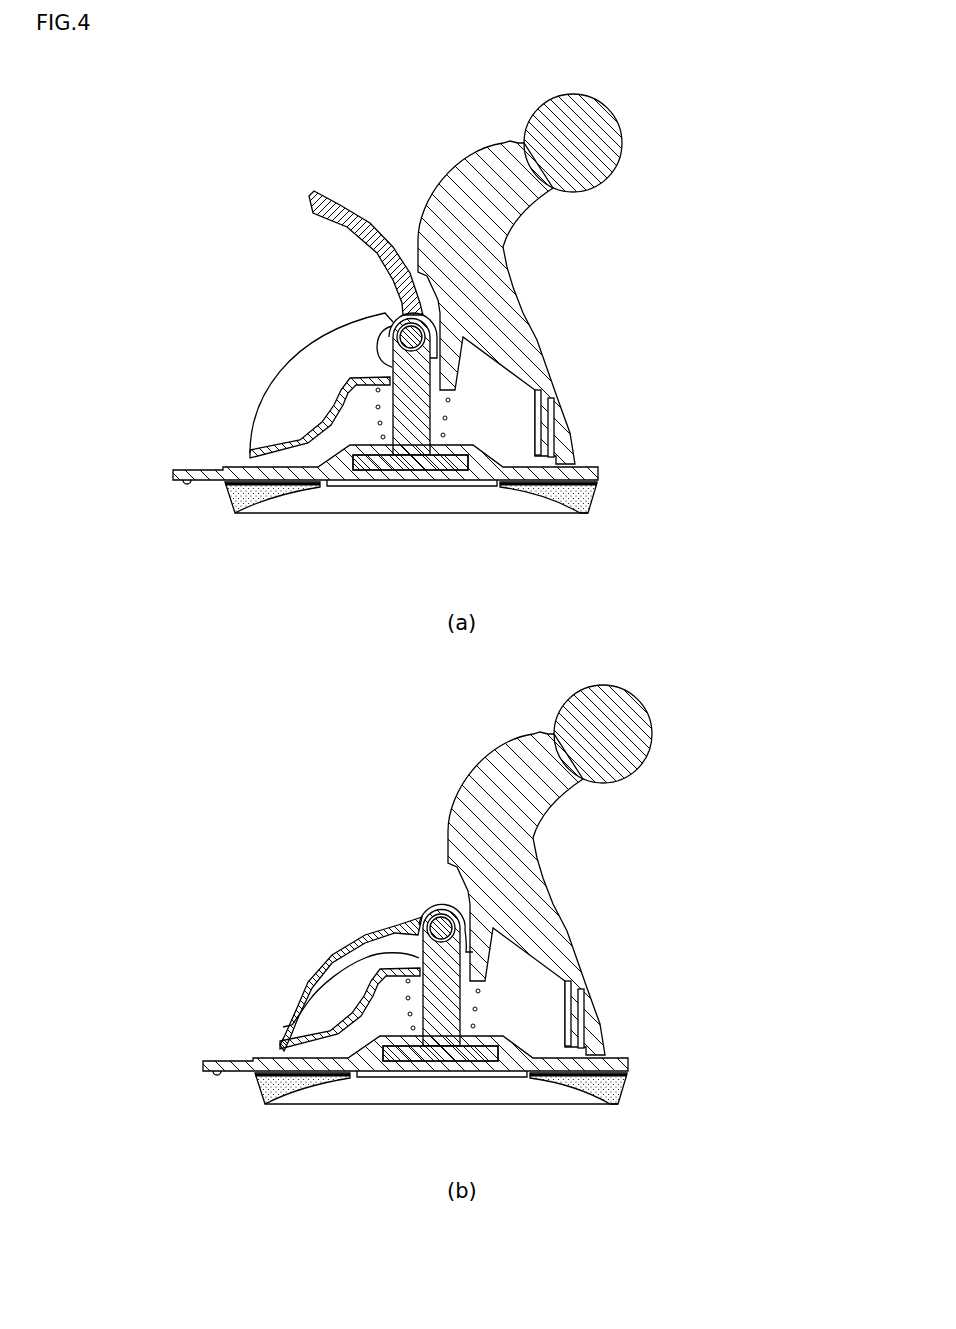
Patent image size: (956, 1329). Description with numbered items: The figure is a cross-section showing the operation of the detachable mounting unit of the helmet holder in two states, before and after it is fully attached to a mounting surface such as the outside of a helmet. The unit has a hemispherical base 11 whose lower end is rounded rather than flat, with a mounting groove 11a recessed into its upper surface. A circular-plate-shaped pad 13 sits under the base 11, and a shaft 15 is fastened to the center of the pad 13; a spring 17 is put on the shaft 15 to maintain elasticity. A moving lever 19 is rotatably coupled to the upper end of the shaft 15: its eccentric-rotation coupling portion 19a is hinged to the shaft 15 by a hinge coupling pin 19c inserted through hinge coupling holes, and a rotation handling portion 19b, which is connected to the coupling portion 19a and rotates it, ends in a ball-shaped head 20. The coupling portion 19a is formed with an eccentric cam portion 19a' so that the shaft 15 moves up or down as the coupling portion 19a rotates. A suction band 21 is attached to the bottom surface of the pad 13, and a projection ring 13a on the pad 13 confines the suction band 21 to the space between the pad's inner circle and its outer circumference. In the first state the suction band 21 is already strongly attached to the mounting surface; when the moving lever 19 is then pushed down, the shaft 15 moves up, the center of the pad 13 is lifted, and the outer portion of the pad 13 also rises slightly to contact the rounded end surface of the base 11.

The base 11 is at (560, 383).
The mounting groove 11a is at (313, 428).
The pad 13 is at (598, 470).
The projection ring 13a is at (598, 487).
The shaft 15 is at (423, 382).
The spring 17 is at (447, 417).
The moving lever 19 is at (432, 621).
The eccentric-rotation coupling portion 19a is at (357, 655).
The eccentric cam portion 19a' is at (436, 650).
The rotation handling portion 19b is at (345, 232).
The hinge coupling pin 19c is at (417, 338).
The ball head 20 is at (477, 177).
The suction band 21 is at (575, 498).